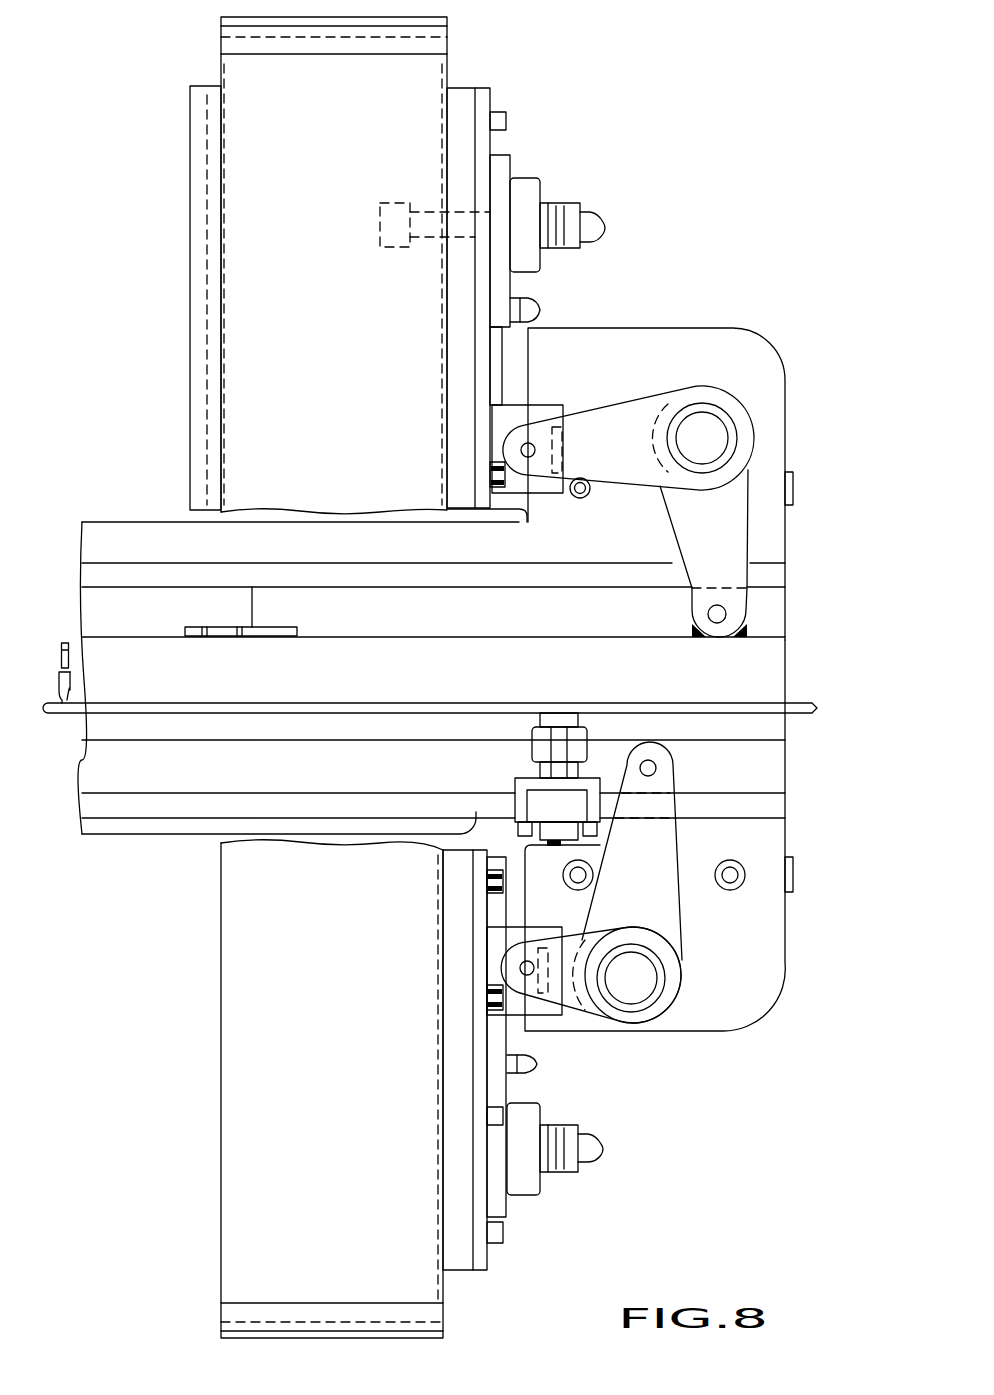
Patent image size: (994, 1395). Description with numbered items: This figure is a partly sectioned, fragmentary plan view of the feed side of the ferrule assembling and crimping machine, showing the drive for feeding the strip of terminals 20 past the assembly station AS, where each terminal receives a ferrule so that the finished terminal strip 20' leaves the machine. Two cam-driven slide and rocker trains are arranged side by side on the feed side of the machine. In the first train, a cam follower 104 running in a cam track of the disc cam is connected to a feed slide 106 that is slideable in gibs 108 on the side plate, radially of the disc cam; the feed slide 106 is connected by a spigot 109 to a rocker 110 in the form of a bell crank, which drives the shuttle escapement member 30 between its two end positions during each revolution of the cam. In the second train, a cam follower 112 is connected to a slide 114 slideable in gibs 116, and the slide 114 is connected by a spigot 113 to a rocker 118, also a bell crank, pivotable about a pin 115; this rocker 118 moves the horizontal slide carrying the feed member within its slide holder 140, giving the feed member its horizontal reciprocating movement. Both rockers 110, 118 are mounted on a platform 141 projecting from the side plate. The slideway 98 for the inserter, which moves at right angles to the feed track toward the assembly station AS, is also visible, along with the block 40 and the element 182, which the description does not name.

The strip of terminals 20 is at (456, 760).
The terminal strip 20' is at (137, 713).
The shuttle escapement member 30 is at (610, 765).
The lower block 40 is at (350, 1043).
The slideway 98 is at (196, 238).
The cam follower 104 is at (403, 196).
The feed slide 106 is at (511, 172).
The gibs 108 is at (493, 88).
The spigot 109 is at (530, 442).
The rocker 110 is at (652, 393).
The cam follower 112 is at (518, 1197).
The spigot 113 is at (527, 962).
The slide 114 is at (493, 1090).
The pin 115 is at (637, 993).
The gibs 116 is at (503, 1162).
The rocker 118 is at (661, 895).
The slide holder 140 is at (738, 633).
The platform 141 is at (738, 352).
The bolt head 182 is at (488, 284).
The assembly station AS is at (259, 641).